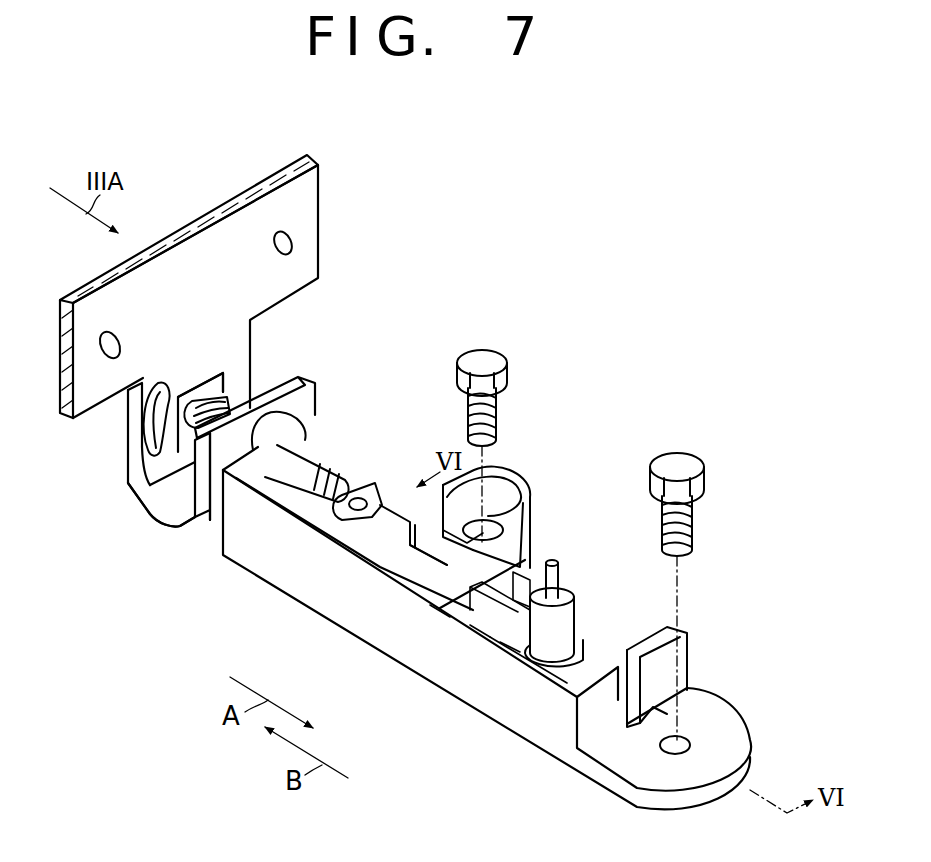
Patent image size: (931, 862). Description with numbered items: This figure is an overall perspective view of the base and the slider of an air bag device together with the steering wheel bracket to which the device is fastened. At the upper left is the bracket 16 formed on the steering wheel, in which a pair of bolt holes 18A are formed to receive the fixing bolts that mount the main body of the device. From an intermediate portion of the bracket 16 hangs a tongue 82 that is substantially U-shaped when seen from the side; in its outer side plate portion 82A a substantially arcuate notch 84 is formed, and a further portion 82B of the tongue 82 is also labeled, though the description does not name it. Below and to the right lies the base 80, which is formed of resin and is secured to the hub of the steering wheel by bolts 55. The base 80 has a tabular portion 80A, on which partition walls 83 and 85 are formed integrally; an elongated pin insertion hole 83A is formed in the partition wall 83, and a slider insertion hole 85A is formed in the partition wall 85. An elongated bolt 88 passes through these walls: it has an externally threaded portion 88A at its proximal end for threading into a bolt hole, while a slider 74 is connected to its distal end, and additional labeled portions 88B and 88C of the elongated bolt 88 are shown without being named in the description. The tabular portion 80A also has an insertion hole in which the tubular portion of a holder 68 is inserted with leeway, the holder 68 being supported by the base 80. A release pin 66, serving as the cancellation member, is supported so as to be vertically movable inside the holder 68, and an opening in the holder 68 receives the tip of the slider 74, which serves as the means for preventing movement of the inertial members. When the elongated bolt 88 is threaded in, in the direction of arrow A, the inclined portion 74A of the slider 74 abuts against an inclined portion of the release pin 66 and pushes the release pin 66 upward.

The bracket 16 is at (320, 190).
The bolt holes 18A is at (290, 240).
The bolts 55 is at (497, 376).
The release pin 66 is at (556, 567).
The holder 68 is at (572, 612).
The slider 74 is at (406, 580).
The inclined portion 74A is at (510, 620).
The base 80 is at (336, 630).
The tabular portion 80A is at (660, 780).
The tongue 82 is at (157, 525).
The side plate portion 82A is at (133, 452).
The clamp leg 82B is at (197, 520).
The partition wall 83 is at (338, 412).
The elongated pin insertion hole 83A is at (282, 472).
The notch 84 is at (130, 497).
The partition wall 85 is at (450, 585).
The slider insertion hole 85A is at (490, 623).
The elongated bolt 88 is at (297, 520).
The externally threaded portion 88A is at (225, 398).
The spring clip 88B is at (330, 410).
The terminal boss 88C is at (378, 507).